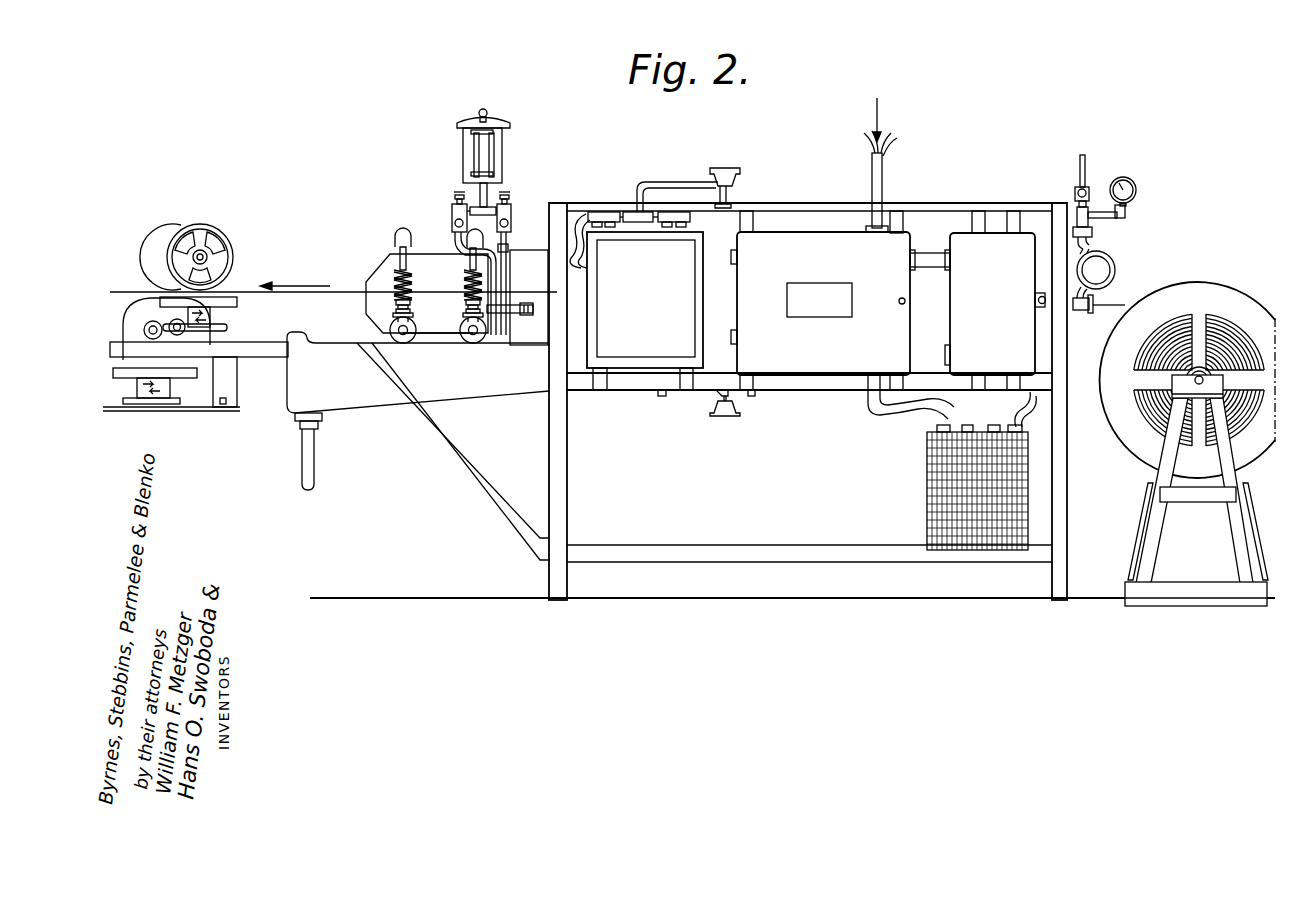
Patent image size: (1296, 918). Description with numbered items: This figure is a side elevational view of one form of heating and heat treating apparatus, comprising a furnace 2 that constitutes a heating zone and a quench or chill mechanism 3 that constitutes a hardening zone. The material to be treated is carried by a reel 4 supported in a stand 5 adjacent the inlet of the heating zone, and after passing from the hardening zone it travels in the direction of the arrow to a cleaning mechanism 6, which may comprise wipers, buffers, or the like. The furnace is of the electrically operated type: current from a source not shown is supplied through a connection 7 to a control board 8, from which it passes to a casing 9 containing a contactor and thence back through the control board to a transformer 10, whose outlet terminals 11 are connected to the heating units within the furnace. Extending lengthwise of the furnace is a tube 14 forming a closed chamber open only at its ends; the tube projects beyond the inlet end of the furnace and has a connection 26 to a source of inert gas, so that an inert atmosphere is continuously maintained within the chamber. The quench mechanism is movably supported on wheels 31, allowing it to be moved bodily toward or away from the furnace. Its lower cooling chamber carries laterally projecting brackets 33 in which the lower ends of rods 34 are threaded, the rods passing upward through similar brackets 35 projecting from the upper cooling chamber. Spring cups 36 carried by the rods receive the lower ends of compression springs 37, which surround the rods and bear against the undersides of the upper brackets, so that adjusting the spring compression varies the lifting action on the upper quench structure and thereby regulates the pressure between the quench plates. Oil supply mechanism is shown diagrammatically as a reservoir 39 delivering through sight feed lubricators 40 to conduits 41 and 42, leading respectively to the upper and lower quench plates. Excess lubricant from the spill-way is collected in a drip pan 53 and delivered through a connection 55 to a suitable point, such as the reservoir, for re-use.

The furnace 2 is at (822, 380).
The quench or chill mechanism 3 is at (388, 264).
The reel 4 is at (1201, 292).
The stand 5 is at (1163, 484).
The cleaning mechanism 6 is at (172, 222).
The connection 7 is at (884, 158).
The control board 8 is at (820, 303).
The casing 9 is at (995, 304).
The transformer 10 is at (940, 470).
The outlet terminals 11 is at (1015, 416).
The tube 14 is at (1081, 310).
The connection 26 is at (1110, 260).
The wheels 31 is at (403, 343).
The brackets 33 is at (392, 318).
The rods 34 is at (466, 264).
The brackets 35 is at (463, 270).
The spring cups 36 is at (465, 305).
The compression springs 37 is at (397, 273).
The reservoir 39 is at (503, 145).
The sight feed lubricators 40 is at (452, 212).
The conduit 41 is at (508, 238).
The conduit 42 is at (456, 243).
The drip pan 53 is at (389, 403).
The connection 55 is at (302, 475).